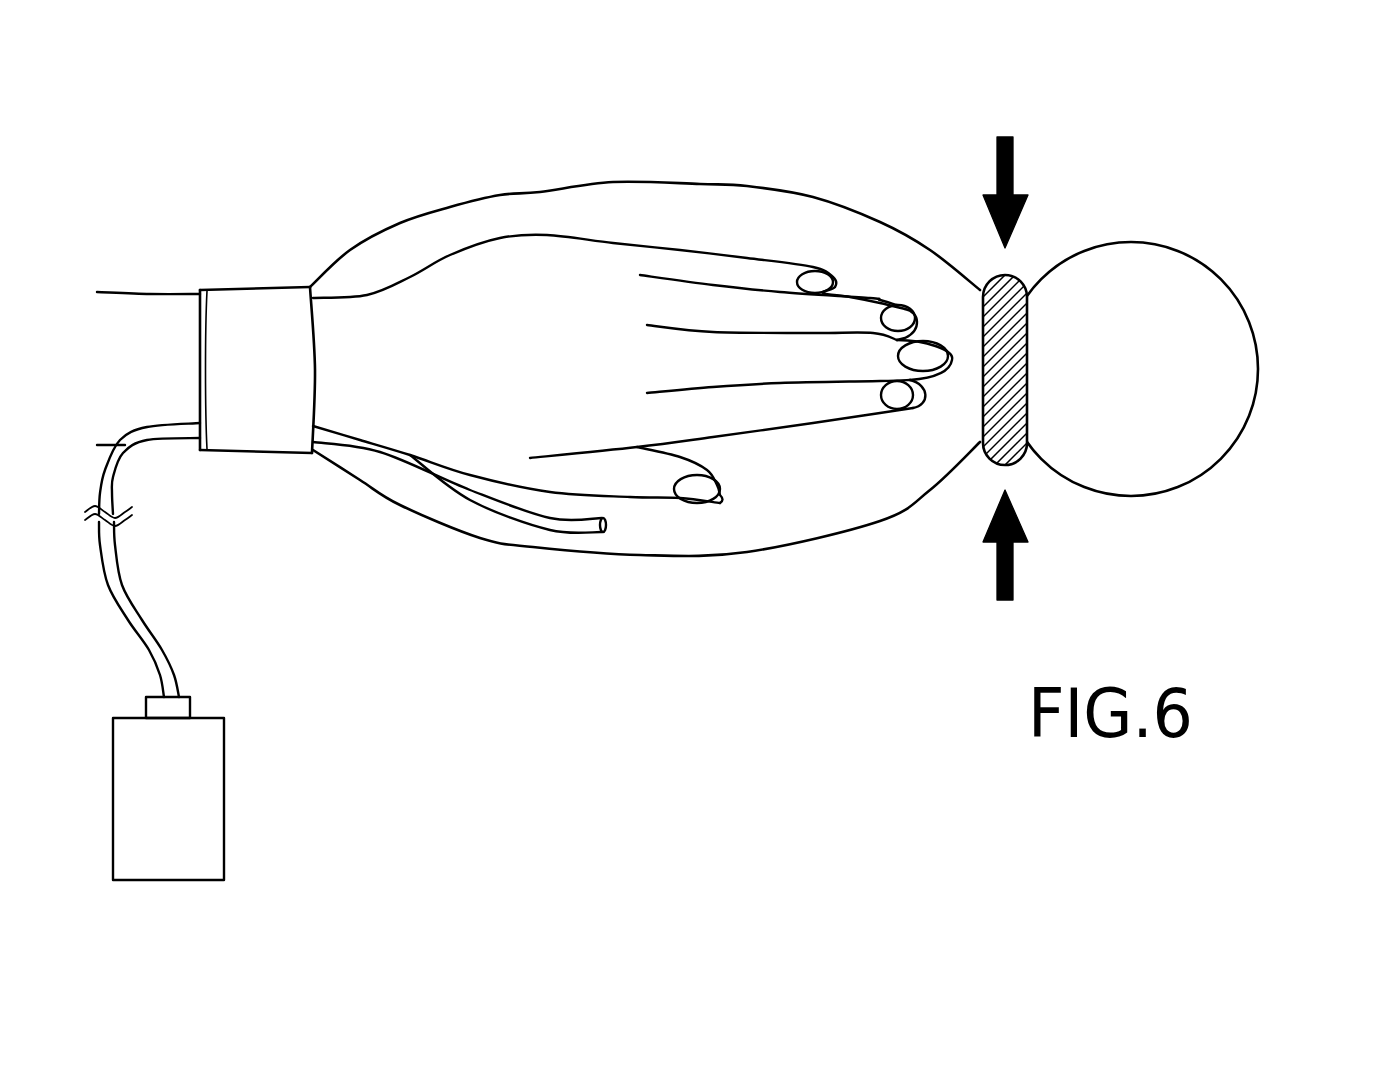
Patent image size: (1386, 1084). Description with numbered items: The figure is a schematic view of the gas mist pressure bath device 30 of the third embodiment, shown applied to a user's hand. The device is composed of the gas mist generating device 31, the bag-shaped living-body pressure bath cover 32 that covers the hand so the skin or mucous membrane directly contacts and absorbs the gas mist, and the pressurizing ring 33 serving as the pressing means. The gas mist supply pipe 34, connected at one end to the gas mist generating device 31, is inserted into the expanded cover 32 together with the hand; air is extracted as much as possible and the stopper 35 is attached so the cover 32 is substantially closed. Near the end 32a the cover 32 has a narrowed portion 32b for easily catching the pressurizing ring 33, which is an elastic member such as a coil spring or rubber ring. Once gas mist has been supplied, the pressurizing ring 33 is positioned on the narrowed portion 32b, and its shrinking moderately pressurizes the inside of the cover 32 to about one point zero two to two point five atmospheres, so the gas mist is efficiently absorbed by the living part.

The gas mist pressure bath device 30 is at (1154, 339).
The gas mist generating device 31 is at (203, 718).
The living-body pressure bath cover 32 is at (790, 185).
The end 32a is at (1258, 345).
The narrowed portion 32b is at (1003, 312).
The pressurizing ring 33 is at (1020, 462).
The gas mist supply pipe 34 is at (545, 532).
The stopper 35 is at (250, 288).